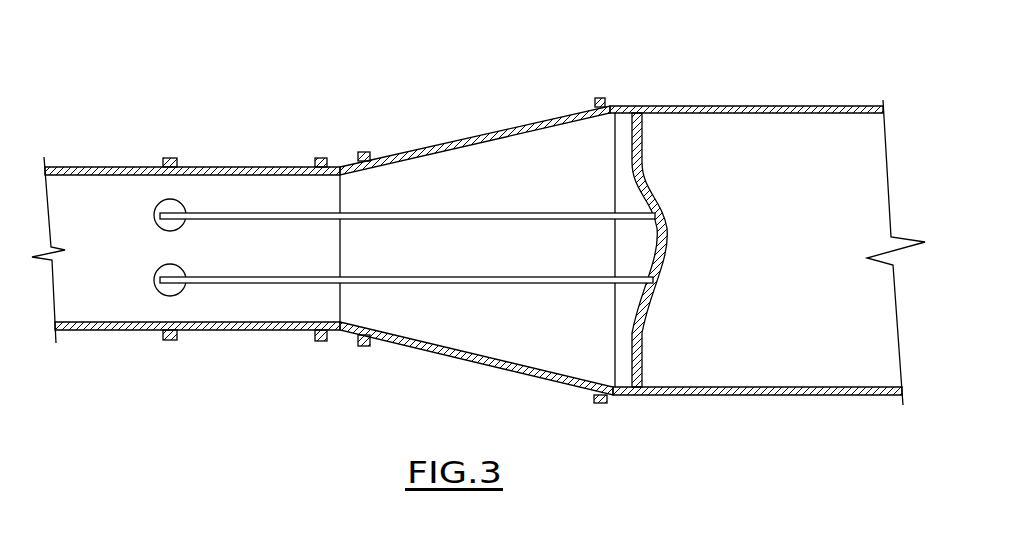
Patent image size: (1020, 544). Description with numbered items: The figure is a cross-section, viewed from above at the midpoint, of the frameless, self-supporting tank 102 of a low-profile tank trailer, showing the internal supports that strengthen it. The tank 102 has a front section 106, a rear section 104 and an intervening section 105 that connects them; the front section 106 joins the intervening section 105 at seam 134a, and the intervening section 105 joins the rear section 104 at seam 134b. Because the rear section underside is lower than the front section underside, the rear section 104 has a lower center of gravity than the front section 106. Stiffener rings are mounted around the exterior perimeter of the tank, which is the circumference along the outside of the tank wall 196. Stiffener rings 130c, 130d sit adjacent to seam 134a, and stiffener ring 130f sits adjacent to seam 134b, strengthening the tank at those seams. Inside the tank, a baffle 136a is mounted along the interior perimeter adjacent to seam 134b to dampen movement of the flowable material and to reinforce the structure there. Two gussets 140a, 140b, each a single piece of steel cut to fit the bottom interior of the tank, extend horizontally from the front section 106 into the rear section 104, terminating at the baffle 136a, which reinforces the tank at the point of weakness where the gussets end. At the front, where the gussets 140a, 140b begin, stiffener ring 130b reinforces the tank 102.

The frameless, self-supporting tank 102 is at (478, 246).
The rear section 104 is at (767, 283).
The intervening section 105 is at (525, 333).
The front section 106 is at (122, 310).
The stiffener ring 130b is at (170, 158).
The stiffener ring 130c is at (321, 158).
The stiffener ring 130d is at (366, 152).
The stiffener ring 130f is at (599, 98).
The seam 134a is at (340, 332).
The seam 134b is at (617, 398).
The baffle 136a is at (662, 210).
The gusset 140a is at (443, 213).
The gusset 140b is at (455, 277).
The tank wall 196 is at (805, 394).